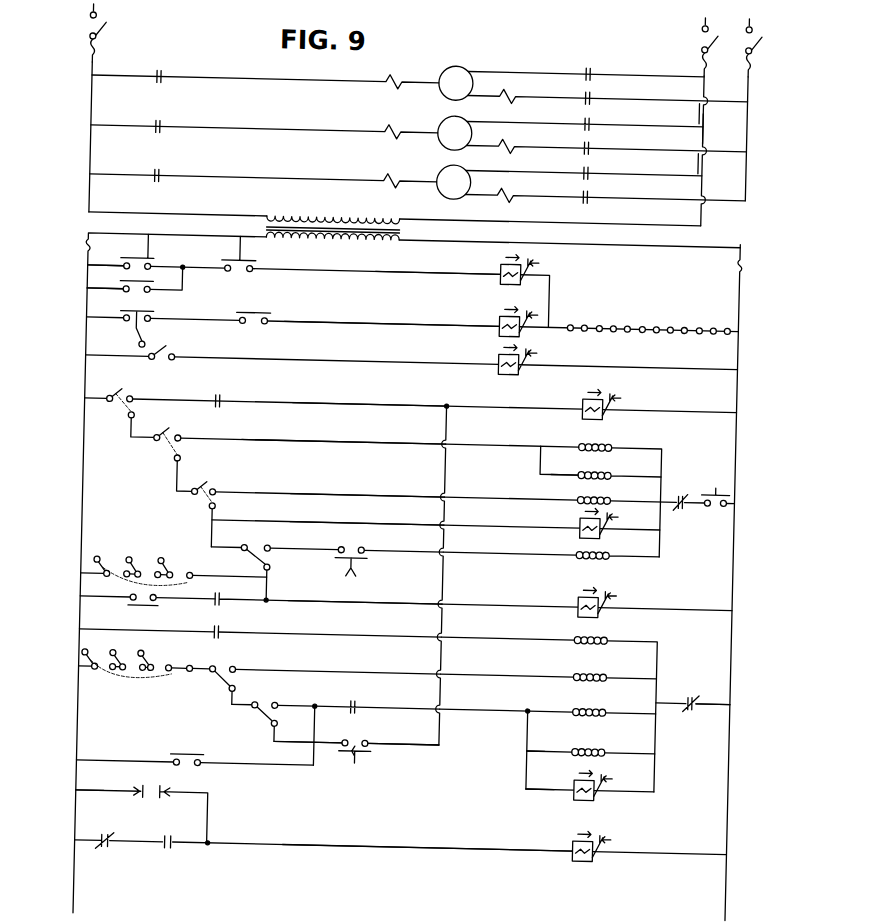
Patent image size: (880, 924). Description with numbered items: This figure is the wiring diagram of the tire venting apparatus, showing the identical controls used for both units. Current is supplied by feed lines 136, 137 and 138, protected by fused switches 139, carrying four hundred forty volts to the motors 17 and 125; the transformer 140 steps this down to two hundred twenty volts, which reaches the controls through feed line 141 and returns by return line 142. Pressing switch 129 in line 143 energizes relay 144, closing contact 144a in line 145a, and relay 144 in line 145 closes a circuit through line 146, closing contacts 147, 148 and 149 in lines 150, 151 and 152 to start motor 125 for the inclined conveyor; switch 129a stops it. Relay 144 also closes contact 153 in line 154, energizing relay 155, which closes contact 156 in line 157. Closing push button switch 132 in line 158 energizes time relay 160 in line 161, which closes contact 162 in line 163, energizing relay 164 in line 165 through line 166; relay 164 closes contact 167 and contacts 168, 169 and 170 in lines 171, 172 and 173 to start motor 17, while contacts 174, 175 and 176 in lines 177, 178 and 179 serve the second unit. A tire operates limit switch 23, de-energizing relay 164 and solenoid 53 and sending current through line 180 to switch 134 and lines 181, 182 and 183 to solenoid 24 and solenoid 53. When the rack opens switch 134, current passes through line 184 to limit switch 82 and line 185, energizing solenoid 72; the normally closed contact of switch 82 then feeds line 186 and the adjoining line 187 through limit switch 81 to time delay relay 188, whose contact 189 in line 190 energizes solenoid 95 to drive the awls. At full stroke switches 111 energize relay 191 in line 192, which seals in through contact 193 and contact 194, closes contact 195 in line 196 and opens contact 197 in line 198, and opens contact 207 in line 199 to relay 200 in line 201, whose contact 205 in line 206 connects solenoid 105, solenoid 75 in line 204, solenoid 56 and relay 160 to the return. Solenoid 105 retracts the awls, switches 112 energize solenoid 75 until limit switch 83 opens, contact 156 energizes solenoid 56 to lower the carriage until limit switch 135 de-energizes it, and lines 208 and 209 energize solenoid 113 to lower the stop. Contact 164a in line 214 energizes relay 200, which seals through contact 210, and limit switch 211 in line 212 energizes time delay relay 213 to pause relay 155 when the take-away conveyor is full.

The motor 17 is at (455, 58).
The limit switch 23 is at (128, 394).
The solenoid 24 is at (624, 462).
The solenoid 53 is at (624, 433).
The solenoid 56 is at (584, 700).
The solenoid 72 is at (574, 493).
The solenoid 75 is at (584, 665).
The limit switch 81 is at (283, 556).
The limit switch 82 is at (216, 498).
The limit switch 83 is at (240, 668).
The solenoid 95 is at (612, 546).
The solenoid 105 is at (586, 626).
The switches 111 is at (206, 575).
The switches 112 is at (170, 652).
The solenoid 113 is at (618, 747).
The motor 125 is at (450, 164).
The switch 129 is at (157, 241).
The switch 129a is at (250, 270).
The push button switch 132 is at (200, 752).
The switch 134 is at (164, 461).
The limit switch 135 is at (278, 700).
The feed line 136 is at (88, 200).
The feed line 137 is at (706, 122).
The feed line 138 is at (750, 158).
The fused switches 139 is at (91, 56).
The transformer 140 is at (272, 208).
The feed line 141 is at (219, 236).
The return line 142 is at (746, 334).
The line 143 is at (105, 267).
The relay 144 is at (505, 252).
The contact 144a is at (150, 292).
The line 145 is at (418, 267).
The line 145a is at (108, 290).
The line 146 is at (556, 294).
The contact 147 is at (163, 172).
The contact 148 is at (594, 158).
The contact 149 is at (592, 190).
The line 150 is at (286, 172).
The line 151 is at (562, 184).
The line 152 is at (556, 163).
The contact 153 is at (270, 310).
The line 154 is at (344, 316).
The relay 155 is at (504, 315).
The contact 156 is at (372, 698).
The line 157 is at (330, 700).
The line 158 is at (312, 764).
The time relay 160 is at (604, 790).
The line 161 is at (560, 782).
The contact 162 is at (374, 757).
The line 163 is at (428, 739).
The relay 164 is at (589, 398).
The contact 164a is at (180, 786).
The line 165 is at (340, 398).
The line 166 is at (458, 582).
The contact 167 is at (232, 401).
The contact 168 is at (163, 73).
The contact 169 is at (592, 60).
The contact 170 is at (592, 90).
The line 171 is at (272, 75).
The line 172 is at (537, 62).
The line 173 is at (545, 87).
The contact 174 is at (163, 123).
The contact 175 is at (592, 116).
The contact 176 is at (582, 136).
The line 177 is at (252, 122).
The line 178 is at (693, 110).
The line 179 is at (680, 138).
The line 180 is at (137, 418).
The line 181 is at (340, 438).
The line 182 is at (543, 461).
The line 183 is at (572, 465).
The line 184 is at (184, 470).
The line 185 is at (396, 492).
The line 186 is at (226, 514).
The line 187 is at (406, 518).
The time delay relay 188 is at (621, 509).
The contact 189 is at (376, 542).
The line 190 is at (516, 544).
The relay 191 is at (622, 590).
The line 192 is at (386, 598).
The contact 193 is at (145, 600).
The contact 194 is at (234, 592).
The contact 195 is at (234, 626).
The line 196 is at (310, 632).
The contact 197 is at (688, 480).
The line 198 is at (702, 492).
The line 199 is at (156, 843).
The relay 200 is at (604, 851).
The line 201 is at (492, 836).
The line 204 is at (346, 668).
The contact 205 is at (740, 688).
The line 206 is at (724, 694).
The contact 207 is at (128, 834).
The line 208 is at (537, 731).
The line 209 is at (560, 743).
The contact 210 is at (190, 834).
The limit switch 211 is at (166, 352).
The line 212 is at (420, 356).
The time delay relay 213 is at (504, 362).
The line 214 is at (106, 794).